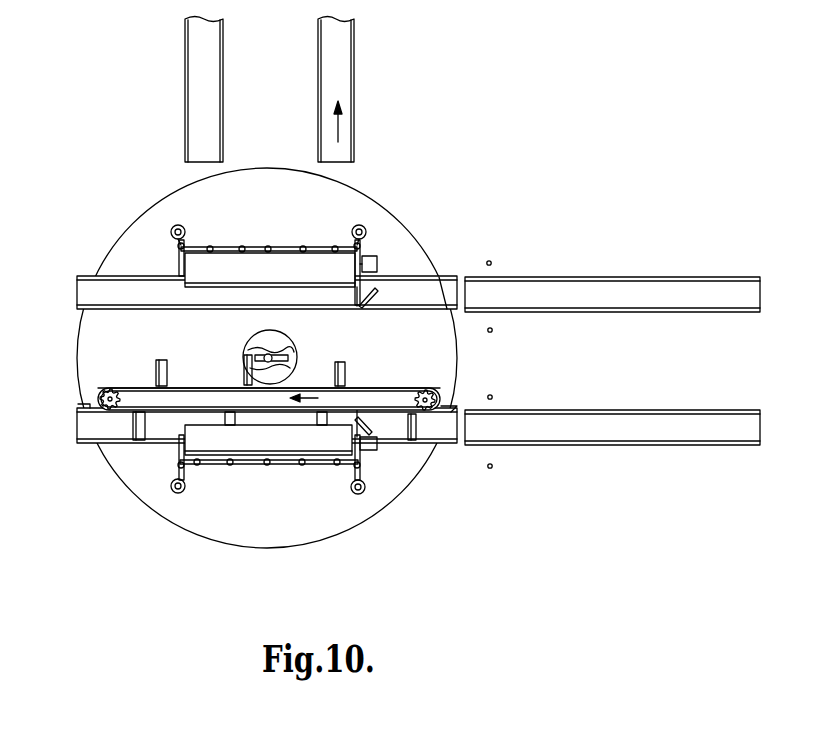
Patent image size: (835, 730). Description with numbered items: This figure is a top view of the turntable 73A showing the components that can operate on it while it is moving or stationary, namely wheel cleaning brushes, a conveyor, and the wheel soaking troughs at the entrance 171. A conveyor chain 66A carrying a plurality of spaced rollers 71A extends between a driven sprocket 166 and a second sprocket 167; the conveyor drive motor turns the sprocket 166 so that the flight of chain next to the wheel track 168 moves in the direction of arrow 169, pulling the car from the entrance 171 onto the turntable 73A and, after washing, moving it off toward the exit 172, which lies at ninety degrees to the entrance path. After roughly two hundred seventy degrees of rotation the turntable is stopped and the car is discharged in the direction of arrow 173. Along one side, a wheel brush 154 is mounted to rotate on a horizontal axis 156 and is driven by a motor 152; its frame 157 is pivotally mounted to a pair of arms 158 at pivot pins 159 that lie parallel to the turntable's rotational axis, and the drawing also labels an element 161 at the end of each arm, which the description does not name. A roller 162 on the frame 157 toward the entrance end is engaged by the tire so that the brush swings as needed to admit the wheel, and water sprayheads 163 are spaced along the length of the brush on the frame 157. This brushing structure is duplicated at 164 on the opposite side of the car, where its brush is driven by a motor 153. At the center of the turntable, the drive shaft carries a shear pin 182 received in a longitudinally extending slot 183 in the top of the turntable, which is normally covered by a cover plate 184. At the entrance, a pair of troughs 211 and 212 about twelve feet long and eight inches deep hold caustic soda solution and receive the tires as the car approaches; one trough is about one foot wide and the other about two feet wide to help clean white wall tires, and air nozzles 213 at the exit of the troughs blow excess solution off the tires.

The exit 172 is at (284, 127).
The arrow 173 is at (340, 130).
The roller wheels 161 is at (183, 226).
The arms 158 is at (186, 247).
The frame 157 is at (267, 246).
The water sprayheads 163 is at (335, 246).
The pivot pins 159 is at (178, 248).
The wheel brush 154 is at (256, 281).
The horizontal axis 156 is at (161, 279).
The motor 152 is at (378, 263).
The roller 162 is at (370, 292).
The sprocket 167 is at (434, 352).
The shear pin 182 is at (252, 356).
The cover plate 184 is at (268, 338).
The slot 183 is at (289, 359).
The rollers 71A is at (158, 362).
The chain 66A is at (199, 388).
The sprocket 166 is at (97, 393).
The arrow 169 is at (326, 400).
The motor 153 is at (371, 448).
The wheel track 168 is at (445, 432).
The turntable 73A is at (180, 513).
The wheel brushing structure 164 is at (288, 500).
The air nozzles 213 is at (492, 261).
The trough 211 is at (665, 292).
The trough 212 is at (676, 432).
The entrance 171 is at (606, 382).